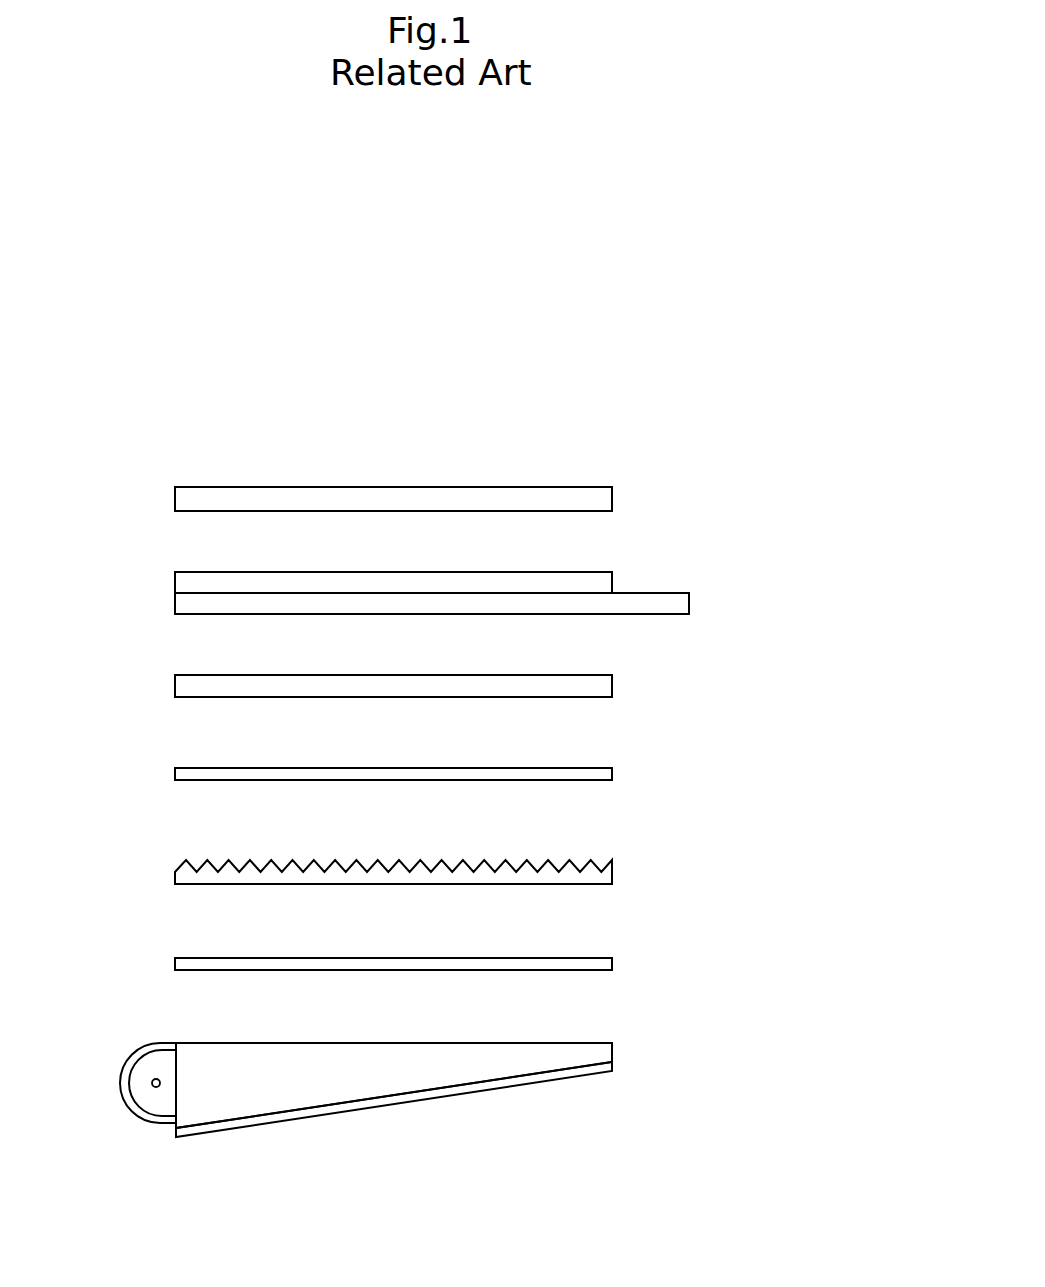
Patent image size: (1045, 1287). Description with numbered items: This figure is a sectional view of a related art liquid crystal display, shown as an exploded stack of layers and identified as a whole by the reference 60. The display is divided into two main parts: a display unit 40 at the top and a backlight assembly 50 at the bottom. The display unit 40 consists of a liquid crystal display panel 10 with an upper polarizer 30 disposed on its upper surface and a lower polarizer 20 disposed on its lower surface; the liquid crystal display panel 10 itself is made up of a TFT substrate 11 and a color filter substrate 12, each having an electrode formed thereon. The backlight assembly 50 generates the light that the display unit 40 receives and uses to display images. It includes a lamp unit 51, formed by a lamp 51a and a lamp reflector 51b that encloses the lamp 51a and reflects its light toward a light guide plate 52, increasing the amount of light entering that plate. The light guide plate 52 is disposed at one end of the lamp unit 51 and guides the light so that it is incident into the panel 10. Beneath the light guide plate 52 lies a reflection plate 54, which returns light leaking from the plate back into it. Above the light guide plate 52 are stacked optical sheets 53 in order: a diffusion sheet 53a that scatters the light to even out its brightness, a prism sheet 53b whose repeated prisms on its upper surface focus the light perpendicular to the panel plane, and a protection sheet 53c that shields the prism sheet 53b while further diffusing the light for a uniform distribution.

The liquid crystal display module 60 is at (589, 428).
The display unit 40 is at (862, 482).
The upper polarizer 30 is at (612, 498).
The liquid crystal display panel 10 is at (500, 573).
The color filter substrate 12 is at (612, 585).
The TFT substrate 11 is at (689, 604).
The lower polarizer 20 is at (612, 686).
The backlight assembly 50 is at (862, 753).
The optical sheets 53 is at (487, 868).
The protection sheet 53c is at (612, 774).
The prism sheet 53b is at (612, 871).
The diffusion sheet 53a is at (451, 963).
The light guide plate 52 is at (613, 1048).
The reflection plate 54 is at (613, 1068).
The lamp unit 51 is at (104, 1129).
The lamp 51a is at (152, 1083).
The lamp reflector 51b is at (143, 1120).